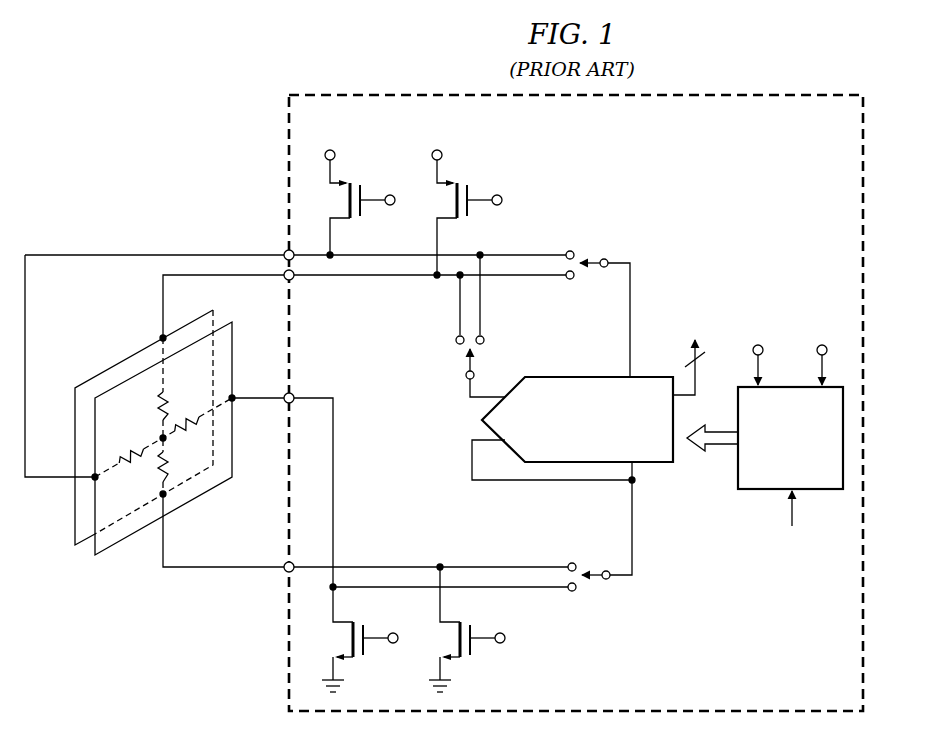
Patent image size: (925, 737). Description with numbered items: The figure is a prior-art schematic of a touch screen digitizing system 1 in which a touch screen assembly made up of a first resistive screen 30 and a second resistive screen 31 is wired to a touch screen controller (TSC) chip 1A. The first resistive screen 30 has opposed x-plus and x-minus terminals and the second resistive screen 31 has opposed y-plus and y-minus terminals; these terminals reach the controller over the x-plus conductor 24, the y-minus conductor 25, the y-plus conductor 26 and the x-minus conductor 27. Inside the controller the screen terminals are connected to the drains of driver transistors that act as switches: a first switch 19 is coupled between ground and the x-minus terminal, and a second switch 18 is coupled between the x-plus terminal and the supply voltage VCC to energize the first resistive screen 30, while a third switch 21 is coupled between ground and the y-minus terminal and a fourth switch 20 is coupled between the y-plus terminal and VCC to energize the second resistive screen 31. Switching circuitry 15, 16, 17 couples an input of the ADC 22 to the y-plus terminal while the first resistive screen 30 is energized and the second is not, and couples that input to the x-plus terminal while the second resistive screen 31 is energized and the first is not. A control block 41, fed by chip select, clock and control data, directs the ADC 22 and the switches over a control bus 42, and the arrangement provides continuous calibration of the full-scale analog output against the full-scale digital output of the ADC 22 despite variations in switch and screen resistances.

The touch screen digitizing system 1 is at (184, 139).
The touch screen controller (TSC) chip 1A is at (757, 93).
The switching circuitry 15 is at (590, 262).
The switching circuitry 16 is at (466, 368).
The switching circuitry 17 is at (606, 580).
The second switch 18 is at (363, 195).
The first switch 19 is at (366, 650).
The fourth switch 20 is at (470, 195).
The third switch 21 is at (473, 650).
The ADC 22 is at (578, 376).
The x+ terminal connection 24 is at (226, 254).
The y- terminal connection 25 is at (228, 568).
The y+ terminal connection 26 is at (161, 296).
The x- terminal connection 27 is at (334, 494).
The first resistive screen 30 is at (207, 499).
The second resistive screen 31 is at (115, 372).
The control circuit 41 is at (778, 470).
The control bus 42 is at (723, 447).